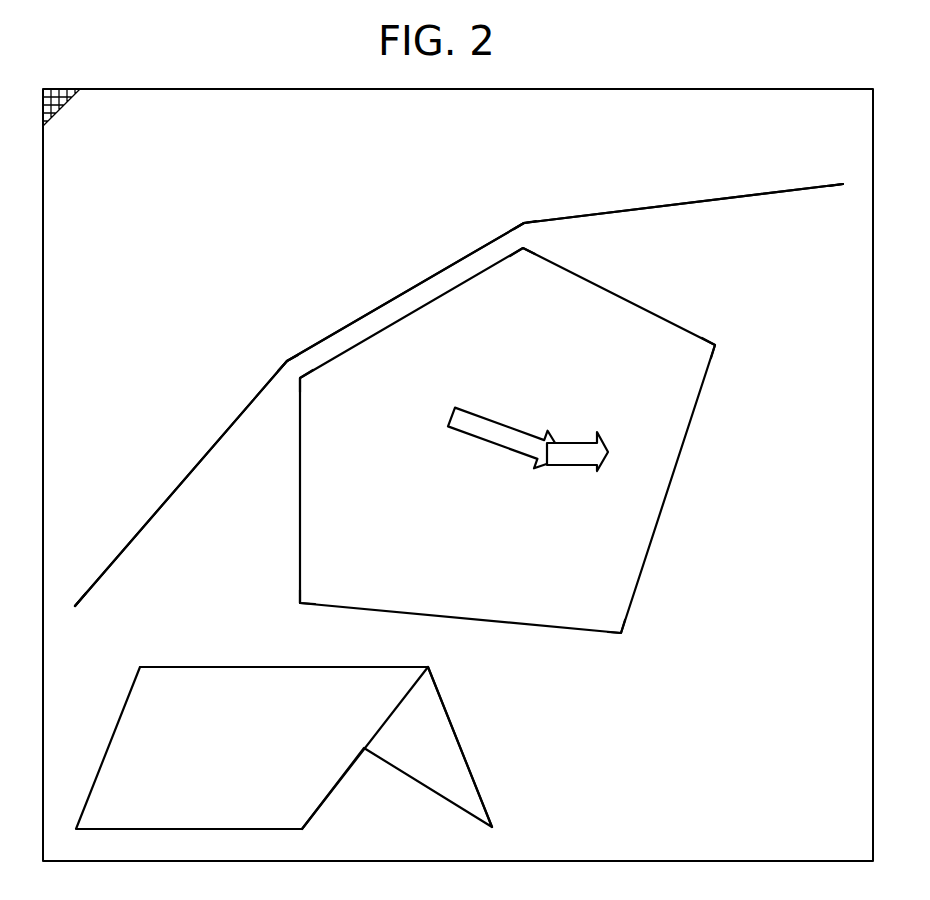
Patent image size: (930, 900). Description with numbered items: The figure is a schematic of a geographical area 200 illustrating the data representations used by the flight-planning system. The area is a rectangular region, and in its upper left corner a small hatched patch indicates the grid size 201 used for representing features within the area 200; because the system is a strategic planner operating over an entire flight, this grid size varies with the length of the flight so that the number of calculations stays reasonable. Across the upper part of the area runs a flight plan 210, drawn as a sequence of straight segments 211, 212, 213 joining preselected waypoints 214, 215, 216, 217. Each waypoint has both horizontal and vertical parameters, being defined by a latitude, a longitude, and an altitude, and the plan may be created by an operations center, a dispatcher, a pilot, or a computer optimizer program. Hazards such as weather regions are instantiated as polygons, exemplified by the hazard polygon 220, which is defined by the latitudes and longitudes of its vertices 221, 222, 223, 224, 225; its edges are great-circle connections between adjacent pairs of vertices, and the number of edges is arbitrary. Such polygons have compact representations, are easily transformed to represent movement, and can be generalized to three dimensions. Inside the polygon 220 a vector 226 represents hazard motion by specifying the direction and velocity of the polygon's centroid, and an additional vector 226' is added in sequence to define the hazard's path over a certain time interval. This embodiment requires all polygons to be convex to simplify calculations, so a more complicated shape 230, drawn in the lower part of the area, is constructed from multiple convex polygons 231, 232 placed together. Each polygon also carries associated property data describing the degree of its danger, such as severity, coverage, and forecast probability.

The geographical area 200 is at (267, 79).
The grid size 201 is at (45, 88).
The flight plan 210 is at (340, 327).
The segment 211 is at (180, 478).
The segment 212 is at (412, 286).
The segment 213 is at (700, 200).
The waypoint 214 is at (75, 606).
The waypoint 215 is at (284, 357).
The waypoint 216 is at (524, 222).
The waypoint 217 is at (842, 182).
The hazard polygon 220 is at (672, 480).
The vertex 221 is at (300, 603).
The vertex 222 is at (300, 378).
The vertex 223 is at (523, 248).
The vertex 224 is at (715, 345).
The vertex 225 is at (621, 633).
The vector 226 is at (510, 433).
The additional vector 226' is at (553, 465).
The complicated shape 230 is at (460, 745).
The convex polygon 231 is at (225, 667).
The convex polygon 232 is at (472, 688).